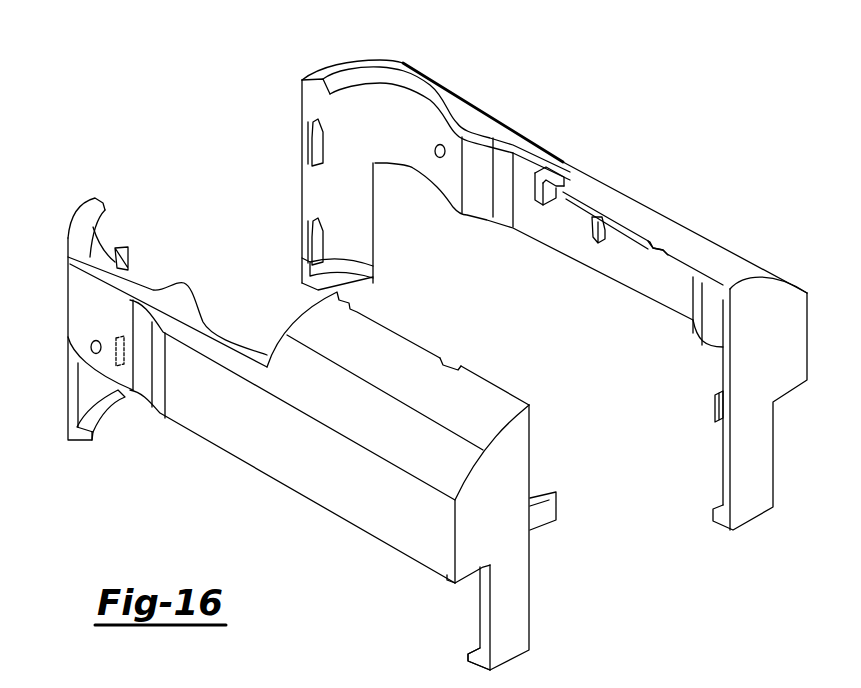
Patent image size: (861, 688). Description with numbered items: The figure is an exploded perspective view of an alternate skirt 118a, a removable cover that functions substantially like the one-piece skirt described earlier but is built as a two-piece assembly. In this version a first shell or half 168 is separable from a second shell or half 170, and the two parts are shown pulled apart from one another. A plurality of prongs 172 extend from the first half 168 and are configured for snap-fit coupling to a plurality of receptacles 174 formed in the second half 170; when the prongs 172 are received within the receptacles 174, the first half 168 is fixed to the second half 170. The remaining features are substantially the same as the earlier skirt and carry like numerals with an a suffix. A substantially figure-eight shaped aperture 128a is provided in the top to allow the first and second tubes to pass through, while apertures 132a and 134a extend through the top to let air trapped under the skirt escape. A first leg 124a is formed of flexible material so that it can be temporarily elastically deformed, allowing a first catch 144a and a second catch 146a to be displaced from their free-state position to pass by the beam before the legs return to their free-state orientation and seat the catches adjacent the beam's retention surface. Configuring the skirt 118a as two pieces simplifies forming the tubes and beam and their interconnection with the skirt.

The alternate skirt 118a is at (638, 193).
The first leg 124a is at (752, 504).
The aperture 128a is at (372, 83).
The aperture 132a is at (554, 186).
The aperture 134a is at (662, 244).
The first catch 144a is at (481, 649).
The second catch 146a is at (105, 413).
The first shell or half 168 is at (362, 510).
The second shell or half 170 is at (729, 268).
The prongs 172 is at (119, 253).
The receptacles 174 is at (309, 148).